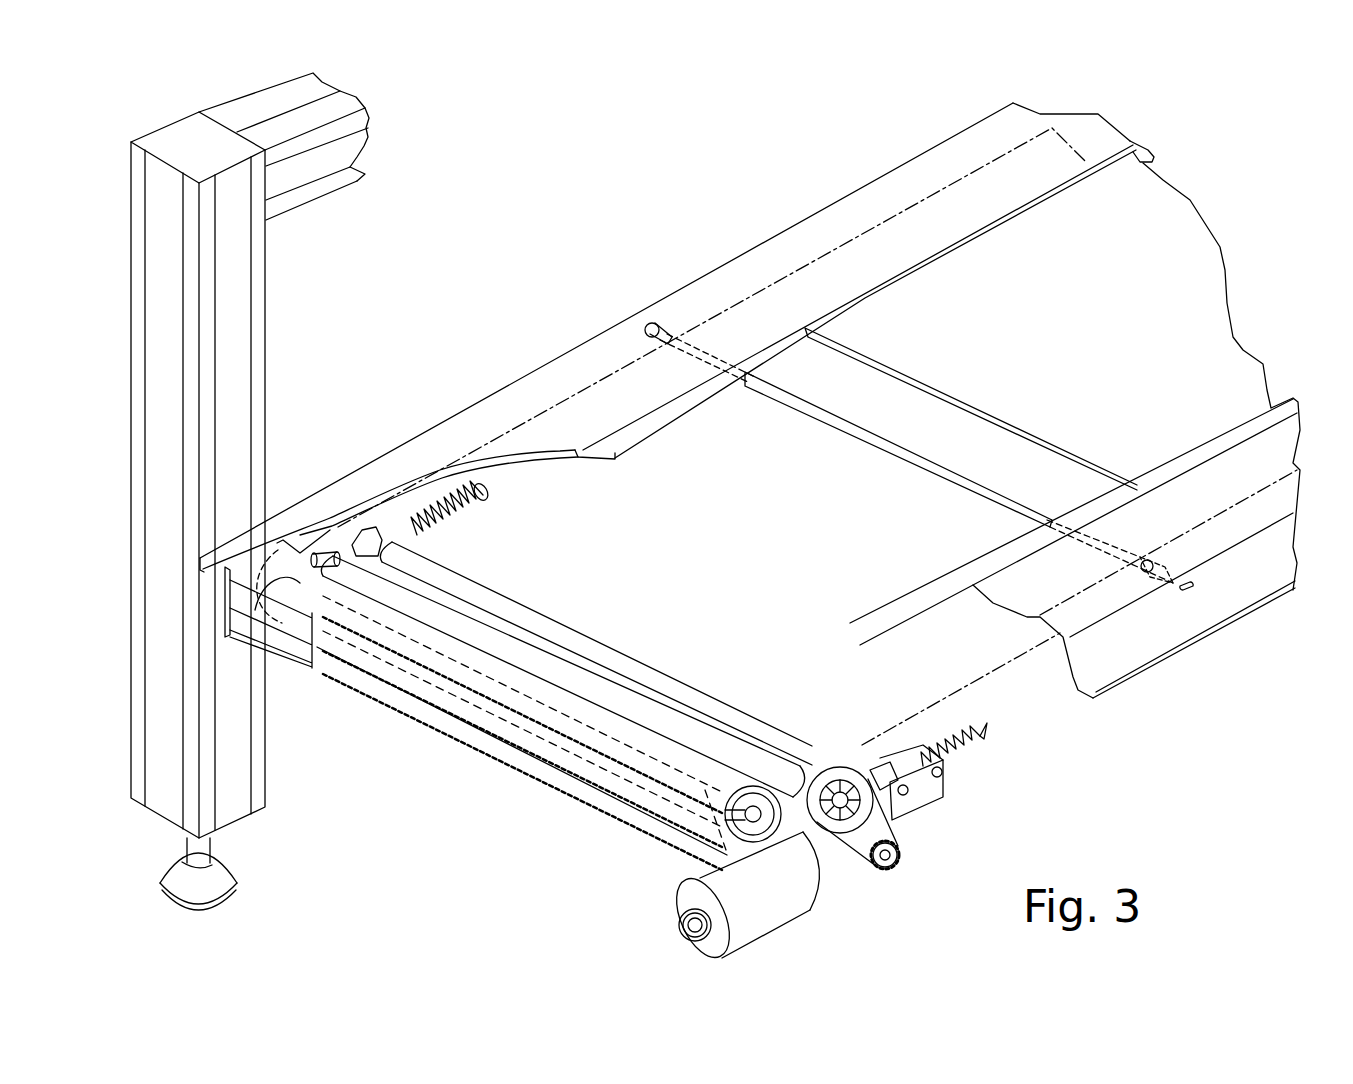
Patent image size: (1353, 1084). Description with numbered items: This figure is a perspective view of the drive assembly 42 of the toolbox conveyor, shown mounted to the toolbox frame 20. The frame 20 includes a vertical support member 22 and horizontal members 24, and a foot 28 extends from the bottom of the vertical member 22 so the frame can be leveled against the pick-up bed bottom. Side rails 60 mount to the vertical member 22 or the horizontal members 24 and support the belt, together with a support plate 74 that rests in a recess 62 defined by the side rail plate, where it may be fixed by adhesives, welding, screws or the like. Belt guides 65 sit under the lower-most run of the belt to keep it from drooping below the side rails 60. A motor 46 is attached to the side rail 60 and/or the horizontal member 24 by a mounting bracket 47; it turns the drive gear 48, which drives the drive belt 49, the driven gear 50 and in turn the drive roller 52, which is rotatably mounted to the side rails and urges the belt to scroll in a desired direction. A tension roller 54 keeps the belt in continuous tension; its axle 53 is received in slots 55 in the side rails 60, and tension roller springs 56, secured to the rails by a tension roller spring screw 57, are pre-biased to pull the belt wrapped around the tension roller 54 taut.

The frame 20 is at (227, 102).
The vertical support member 22 is at (233, 375).
The horizontal member 24 is at (312, 163).
The foot 28 is at (228, 877).
The drive assembly 42 is at (474, 824).
The motor 46 is at (677, 892).
The mounting bracket 47 is at (940, 783).
The drive gear 48 is at (887, 868).
The drive belt 49 is at (847, 860).
The driven gear 50 is at (848, 765).
The drive roller 52 is at (577, 673).
The axle 53 is at (403, 533).
The tension roller 54 is at (523, 613).
The slot 55 is at (370, 535).
The tension roller spring 56 is at (458, 513).
The tension roller spring screw 57 is at (490, 490).
The side rail 60 is at (580, 352).
The recess 62 is at (667, 418).
The belt guide 65 is at (1141, 557).
The support plate 74 is at (927, 320).